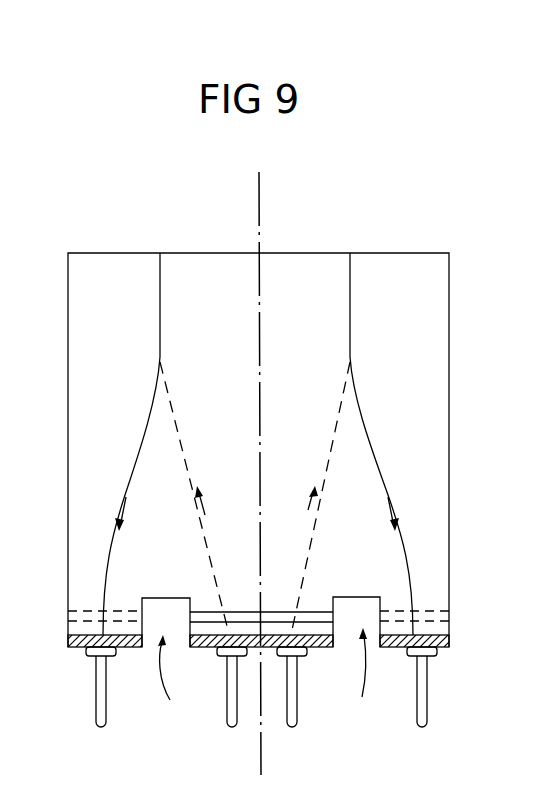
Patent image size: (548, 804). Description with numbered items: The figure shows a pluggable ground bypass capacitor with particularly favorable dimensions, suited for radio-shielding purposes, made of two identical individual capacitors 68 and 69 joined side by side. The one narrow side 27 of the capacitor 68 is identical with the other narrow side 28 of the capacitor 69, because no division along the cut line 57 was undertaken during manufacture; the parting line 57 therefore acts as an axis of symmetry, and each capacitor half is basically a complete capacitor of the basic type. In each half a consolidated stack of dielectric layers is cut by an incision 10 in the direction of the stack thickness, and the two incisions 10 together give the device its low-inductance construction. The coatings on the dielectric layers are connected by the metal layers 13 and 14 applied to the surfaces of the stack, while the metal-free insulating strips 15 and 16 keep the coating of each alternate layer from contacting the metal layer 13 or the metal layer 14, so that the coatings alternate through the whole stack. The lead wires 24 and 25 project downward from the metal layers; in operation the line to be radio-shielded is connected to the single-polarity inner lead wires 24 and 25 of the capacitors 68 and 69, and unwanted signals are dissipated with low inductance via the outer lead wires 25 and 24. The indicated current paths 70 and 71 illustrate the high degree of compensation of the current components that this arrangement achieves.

The incision 10 is at (262, 672).
The metal layer 13 is at (78, 648).
The metal layer 14 is at (208, 646).
The metal-free insulating strip 15 is at (245, 612).
The metal-free insulating strip 16 is at (92, 612).
The lead wire 24 is at (97, 709).
The lead wire 25 is at (227, 713).
The narrow side 27 is at (68, 407).
The narrow side 28 is at (259, 331).
The cut line 57 is at (259, 192).
The individual capacitor 68 is at (430, 318).
The individual capacitor 69 is at (87, 317).
The current path 70 is at (258, 496).
The current path 71 is at (255, 496).